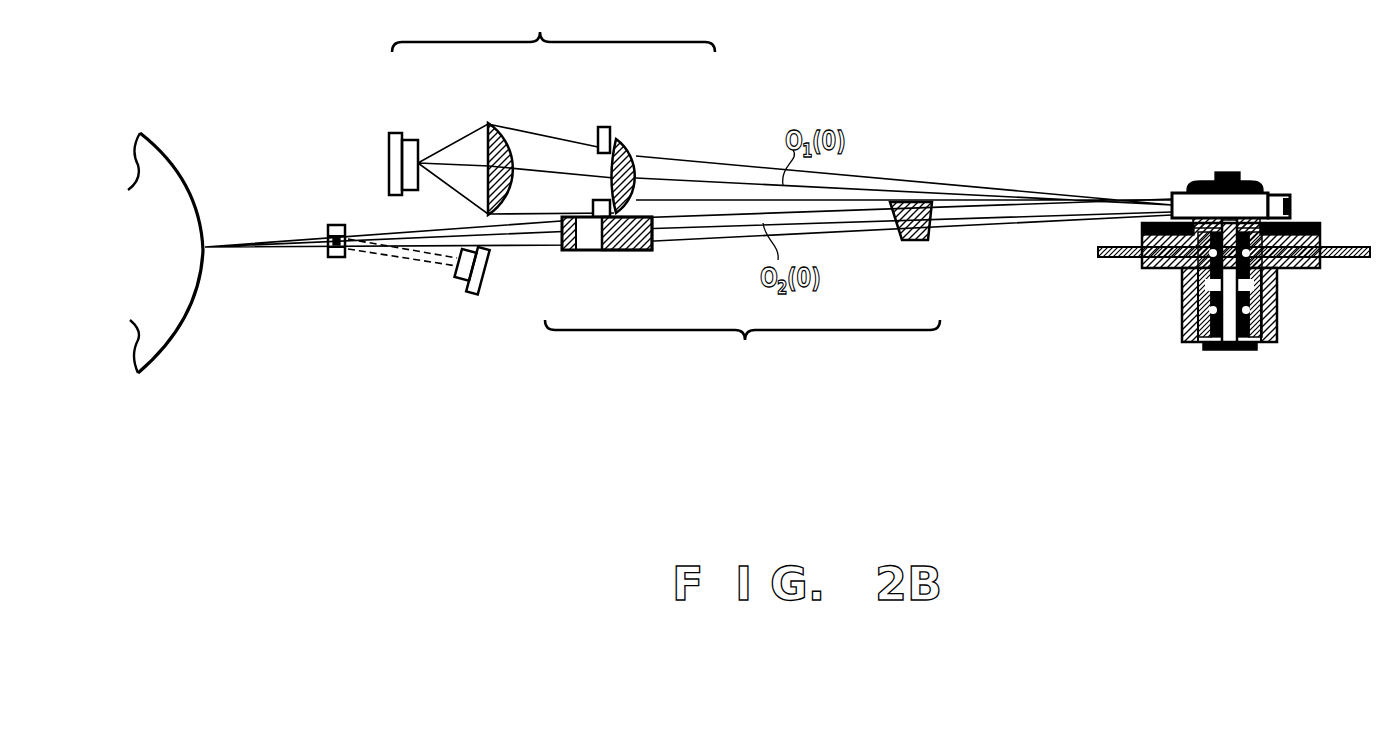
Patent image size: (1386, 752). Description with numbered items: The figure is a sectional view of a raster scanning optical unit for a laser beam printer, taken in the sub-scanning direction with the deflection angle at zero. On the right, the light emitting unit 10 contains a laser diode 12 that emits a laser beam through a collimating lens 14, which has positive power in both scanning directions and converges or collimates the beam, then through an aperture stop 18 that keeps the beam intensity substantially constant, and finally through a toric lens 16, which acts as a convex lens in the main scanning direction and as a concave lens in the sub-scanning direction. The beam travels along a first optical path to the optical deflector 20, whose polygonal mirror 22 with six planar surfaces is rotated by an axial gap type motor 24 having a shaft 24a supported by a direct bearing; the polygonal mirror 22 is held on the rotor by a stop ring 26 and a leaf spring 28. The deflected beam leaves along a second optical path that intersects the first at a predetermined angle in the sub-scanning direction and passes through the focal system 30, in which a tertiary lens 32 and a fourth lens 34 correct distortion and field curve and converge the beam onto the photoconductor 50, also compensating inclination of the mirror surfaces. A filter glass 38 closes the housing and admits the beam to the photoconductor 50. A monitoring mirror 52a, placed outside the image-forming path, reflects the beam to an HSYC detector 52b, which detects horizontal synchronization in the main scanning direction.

The light emitting unit 10 is at (553, 27).
The laser diode 12 is at (400, 133).
The collimating lens 14 is at (492, 123).
The toric lens 16 is at (632, 140).
The aperture stop 18 is at (603, 127).
The optical deflector 20 is at (1297, 207).
The polygonal mirror 22 is at (1180, 192).
The axial gap type motor 24 is at (1182, 313).
The shaft 24a is at (1227, 350).
The stop ring 26 is at (1247, 184).
The leaf spring 28 is at (1258, 192).
The focal system 30 is at (742, 349).
The tertiary lens 32 is at (912, 240).
The fourth lens 34 is at (645, 250).
The filter glass 38 is at (572, 250).
The photoconductor 50 is at (192, 317).
The monitoring mirror 52a is at (333, 258).
The HSYC detector 52b is at (478, 292).